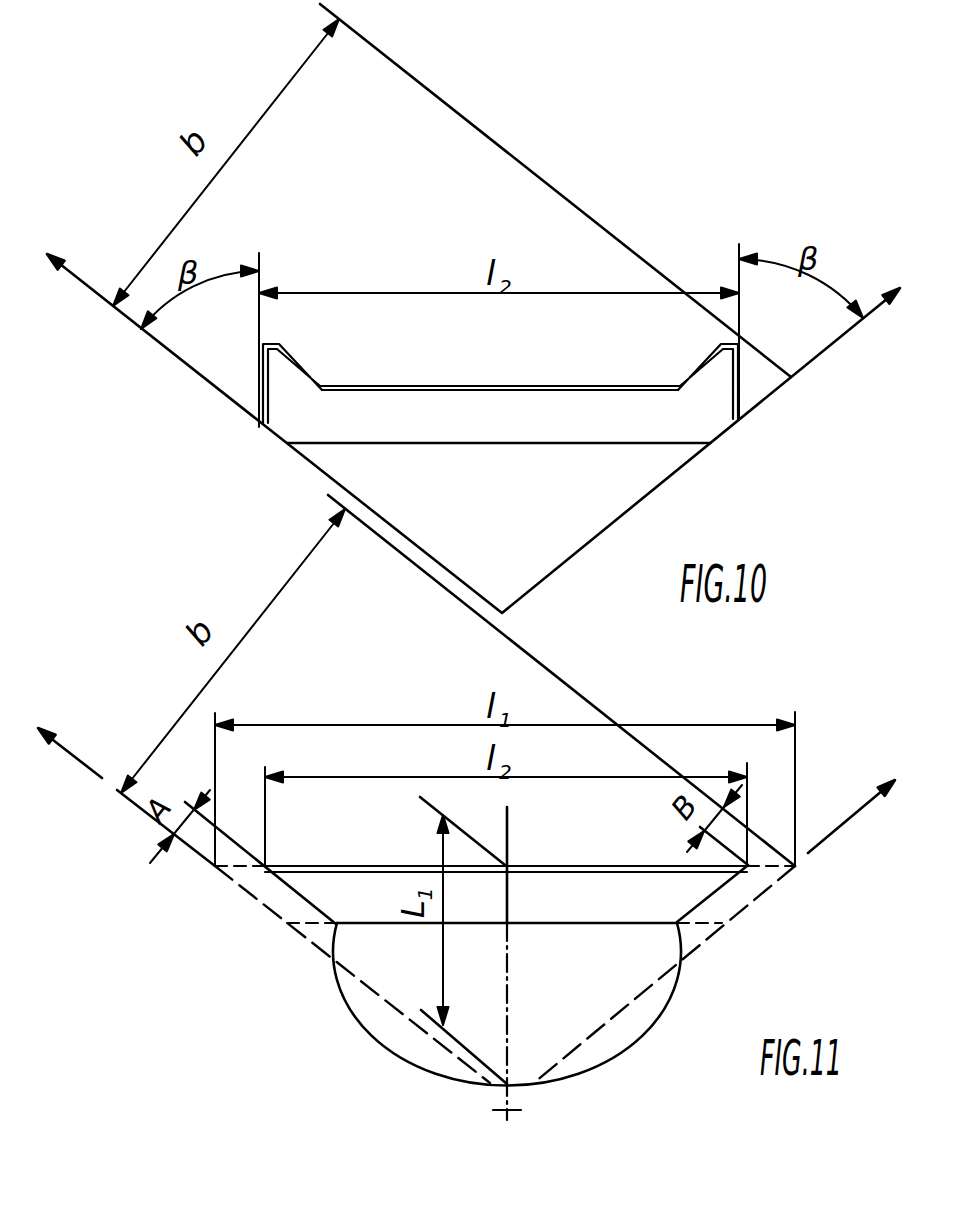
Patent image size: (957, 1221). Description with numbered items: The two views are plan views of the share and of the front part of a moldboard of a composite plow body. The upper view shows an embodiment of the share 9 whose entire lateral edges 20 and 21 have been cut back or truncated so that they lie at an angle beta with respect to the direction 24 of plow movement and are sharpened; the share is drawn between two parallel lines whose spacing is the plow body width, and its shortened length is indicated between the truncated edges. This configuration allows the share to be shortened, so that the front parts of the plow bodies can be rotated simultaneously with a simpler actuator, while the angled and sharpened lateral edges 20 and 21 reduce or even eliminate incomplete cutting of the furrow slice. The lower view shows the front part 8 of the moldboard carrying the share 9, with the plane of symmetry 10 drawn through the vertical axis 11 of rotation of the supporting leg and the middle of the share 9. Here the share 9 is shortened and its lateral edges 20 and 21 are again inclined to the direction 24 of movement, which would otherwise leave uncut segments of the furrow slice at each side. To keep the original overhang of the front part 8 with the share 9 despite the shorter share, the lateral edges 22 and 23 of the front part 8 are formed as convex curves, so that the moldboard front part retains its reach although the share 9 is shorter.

In FIG. 11, the front part of the moldboard 8 is at (633, 973).
In FIG. 11, the share 9 is at (697, 882).
In FIG. 11, the plane of symmetry 10 is at (510, 1020).
In FIG. 11, the vertical axis of rotation 11 is at (519, 1110).
In FIG. 10, the lateral edge of the share 20 is at (262, 360).
In FIG. 11, the lateral edge of the share 20 is at (282, 880).
In FIG. 10, the lateral edge of the share 21 is at (744, 383).
In FIG. 11, the lateral edge of the share 21 is at (723, 882).
In FIG. 11, the lateral edge of the front part of the moldboard 22 is at (345, 1012).
In FIG. 11, the lateral edge of the front part of the moldboard 23 is at (655, 1028).
In FIG. 10, the direction of plow movement 24 is at (82, 281).
In FIG. 11, the direction of plow movement 24 is at (77, 761).